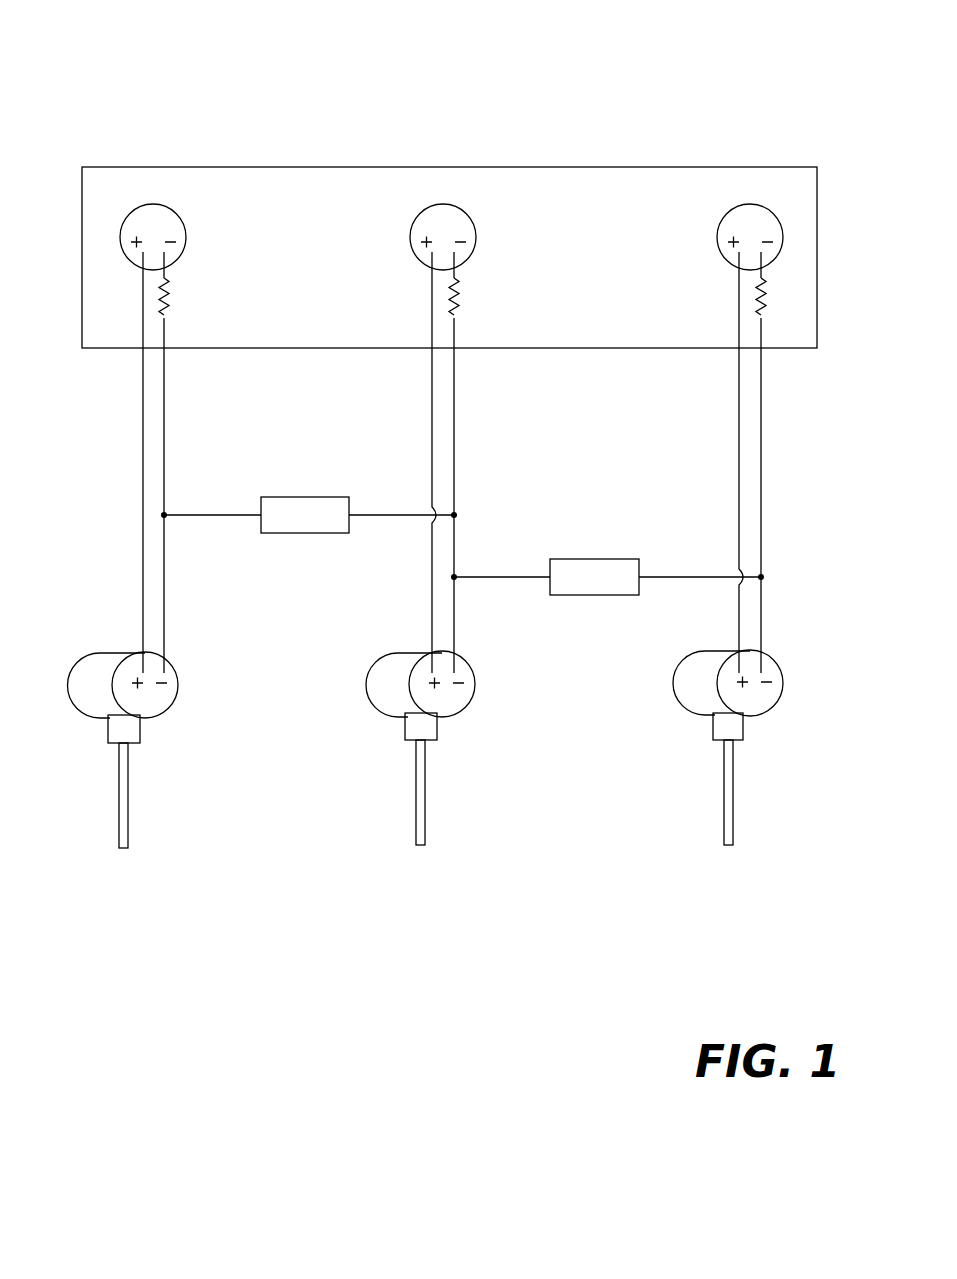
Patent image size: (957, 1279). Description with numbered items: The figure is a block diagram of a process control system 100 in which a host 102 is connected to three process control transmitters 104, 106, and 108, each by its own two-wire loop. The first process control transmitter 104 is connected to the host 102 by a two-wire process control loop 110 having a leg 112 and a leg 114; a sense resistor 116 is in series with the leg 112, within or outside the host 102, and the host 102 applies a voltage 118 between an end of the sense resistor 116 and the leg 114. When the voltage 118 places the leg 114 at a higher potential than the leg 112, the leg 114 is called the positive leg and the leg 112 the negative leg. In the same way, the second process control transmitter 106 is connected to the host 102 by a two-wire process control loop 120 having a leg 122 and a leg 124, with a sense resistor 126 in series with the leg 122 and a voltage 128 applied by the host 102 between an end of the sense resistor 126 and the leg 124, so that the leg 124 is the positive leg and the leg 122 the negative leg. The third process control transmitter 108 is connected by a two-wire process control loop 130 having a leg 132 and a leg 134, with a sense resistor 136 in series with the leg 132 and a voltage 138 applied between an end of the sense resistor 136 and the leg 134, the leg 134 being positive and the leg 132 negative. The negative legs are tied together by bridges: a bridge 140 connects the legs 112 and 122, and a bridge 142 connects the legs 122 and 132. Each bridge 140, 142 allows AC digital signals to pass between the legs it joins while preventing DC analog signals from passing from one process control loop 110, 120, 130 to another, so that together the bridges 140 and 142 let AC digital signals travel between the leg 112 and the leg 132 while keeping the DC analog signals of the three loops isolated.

The process control system 100 is at (734, 84).
The host 102 is at (408, 196).
The process control transmitter 104 is at (150, 718).
The process control transmitter 106 is at (448, 717).
The process control transmitter 108 is at (755, 716).
The two-wire process control loop 110 is at (116, 553).
The leg 112 is at (165, 423).
The leg 114 is at (142, 497).
The sense resistor 116 is at (170, 295).
The voltage 118 is at (176, 212).
The two-wire process control loop 120 is at (478, 426).
The leg 122 is at (455, 465).
The leg 124 is at (432, 416).
The sense resistor 126 is at (460, 303).
The voltage 128 is at (476, 226).
The two-wire process control loop 130 is at (793, 428).
The leg 132 is at (762, 495).
The leg 134 is at (739, 433).
The sense resistor 136 is at (766, 318).
The voltage 138 is at (783, 240).
The bridge 140 is at (295, 533).
The bridge 142 is at (585, 595).